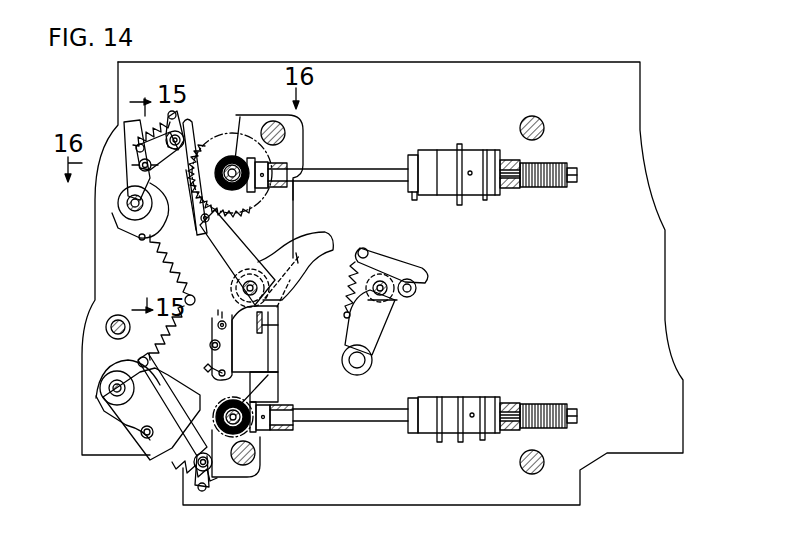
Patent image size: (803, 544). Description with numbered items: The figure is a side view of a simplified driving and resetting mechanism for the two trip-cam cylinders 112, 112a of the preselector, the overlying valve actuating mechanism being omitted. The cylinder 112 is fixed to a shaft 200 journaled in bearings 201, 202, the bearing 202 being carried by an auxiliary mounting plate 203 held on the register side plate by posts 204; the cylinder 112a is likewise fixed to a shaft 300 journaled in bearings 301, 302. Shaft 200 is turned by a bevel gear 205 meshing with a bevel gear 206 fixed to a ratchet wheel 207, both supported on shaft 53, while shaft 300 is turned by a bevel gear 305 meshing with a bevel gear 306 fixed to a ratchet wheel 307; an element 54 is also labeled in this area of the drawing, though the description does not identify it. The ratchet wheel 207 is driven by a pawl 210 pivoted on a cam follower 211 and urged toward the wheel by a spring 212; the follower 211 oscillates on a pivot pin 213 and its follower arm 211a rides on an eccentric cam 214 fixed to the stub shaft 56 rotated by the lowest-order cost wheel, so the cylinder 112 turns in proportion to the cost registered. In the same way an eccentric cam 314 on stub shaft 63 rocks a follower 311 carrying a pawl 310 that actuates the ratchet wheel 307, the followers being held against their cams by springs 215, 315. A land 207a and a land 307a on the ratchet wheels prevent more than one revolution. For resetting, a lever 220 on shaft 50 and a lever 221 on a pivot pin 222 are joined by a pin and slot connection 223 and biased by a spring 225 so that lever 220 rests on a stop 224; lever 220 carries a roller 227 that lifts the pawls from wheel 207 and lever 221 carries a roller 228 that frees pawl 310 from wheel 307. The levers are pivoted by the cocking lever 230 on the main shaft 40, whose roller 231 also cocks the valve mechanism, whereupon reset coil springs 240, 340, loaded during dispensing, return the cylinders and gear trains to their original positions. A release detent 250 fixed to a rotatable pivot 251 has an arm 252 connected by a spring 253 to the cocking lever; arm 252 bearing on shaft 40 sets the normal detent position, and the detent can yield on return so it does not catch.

The main shaft 40 is at (397, 303).
The shaft 50 is at (252, 283).
The shaft 53 is at (230, 160).
The lever 54 is at (213, 410).
The stub shaft 56 is at (140, 234).
The stub shaft 63 is at (100, 384).
The cylinder 112 is at (445, 151).
The cylinder 112a is at (452, 438).
The shaft 200 is at (368, 174).
The bearing 201 is at (512, 190).
The bearing 202 is at (287, 168).
The auxiliary mounting plate 203 is at (295, 127).
The posts 204 is at (293, 118).
The bevel gear 205 is at (295, 158).
The bevel gear 206 is at (240, 160).
The ratchet wheel 207 is at (206, 125).
The land 207a is at (207, 198).
The pawl 210 is at (114, 189).
The cam follower 211 is at (183, 168).
The follower arm 211a is at (133, 206).
The spring 212 is at (150, 127).
The pivot pin 213 is at (136, 147).
The eccentric cam 214 is at (132, 211).
The spring 215 is at (158, 264).
The lever 220 is at (233, 257).
The lever 221 is at (278, 328).
The pivot pin 222 is at (210, 346).
The pin and slot connection 223 is at (222, 318).
The stop 224 is at (272, 317).
The spring 225 is at (296, 253).
The roller 227 is at (210, 218).
The roller 228 is at (204, 368).
The cocking lever 230 is at (380, 320).
The roller 231 is at (373, 360).
The reset coil spring 240 is at (550, 163).
The release detent 250 is at (417, 276).
The rotatable pivot 251 is at (408, 270).
The arm 252 is at (365, 250).
The spring 253 is at (353, 287).
The shaft 300 is at (365, 423).
The bearing 301 is at (507, 403).
The bearing 302 is at (280, 428).
The bevel gear 305 is at (255, 402).
The bevel gear 306 is at (235, 436).
The ratchet wheel 307 is at (272, 377).
The land 307a is at (240, 387).
The pawl 310 is at (153, 460).
The follower 311 is at (100, 405).
The eccentric cam 314 is at (103, 367).
The spring 315 is at (120, 339).
The reset coil spring 340 is at (555, 405).